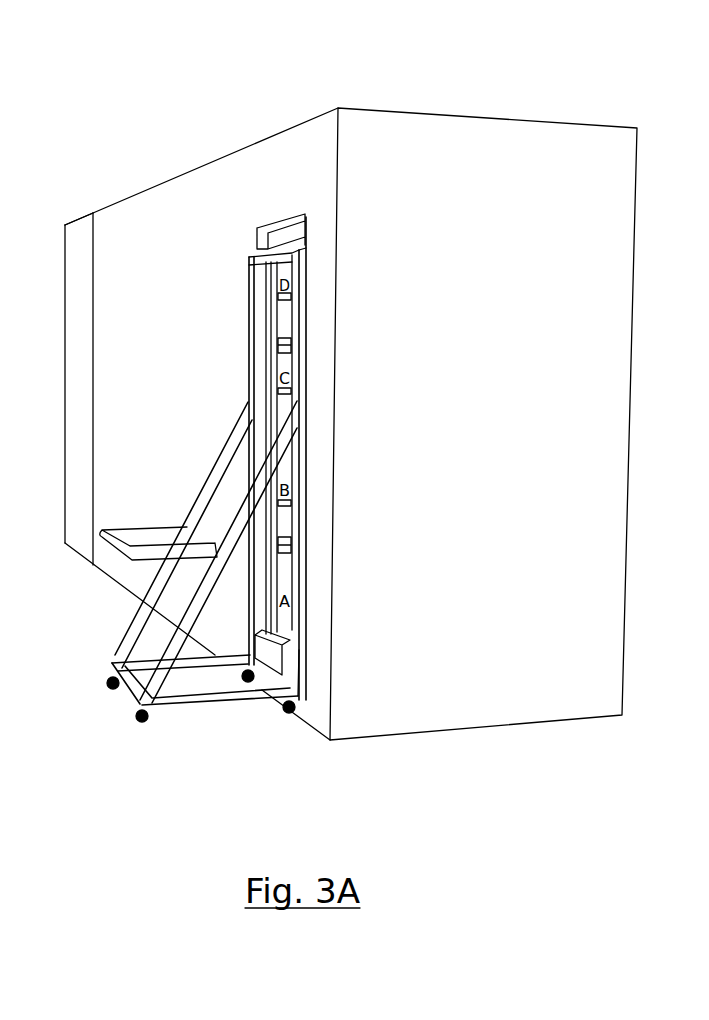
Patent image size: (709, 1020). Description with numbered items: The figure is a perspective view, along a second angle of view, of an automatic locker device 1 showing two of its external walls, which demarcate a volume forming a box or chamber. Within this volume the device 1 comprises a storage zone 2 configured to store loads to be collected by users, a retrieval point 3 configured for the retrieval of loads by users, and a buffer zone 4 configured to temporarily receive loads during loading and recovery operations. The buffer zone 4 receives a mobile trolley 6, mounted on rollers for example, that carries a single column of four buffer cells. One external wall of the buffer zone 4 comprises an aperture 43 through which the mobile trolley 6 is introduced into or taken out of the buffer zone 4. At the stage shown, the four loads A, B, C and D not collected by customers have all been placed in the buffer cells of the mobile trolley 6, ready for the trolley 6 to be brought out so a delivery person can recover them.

The automatic locker device 1 is at (452, 62).
The storage zone 2 is at (193, 195).
The retrieval point 3 is at (80, 232).
The buffer zone 4 is at (313, 143).
The aperture 43 is at (265, 228).
The mobile trolley 6 is at (223, 543).